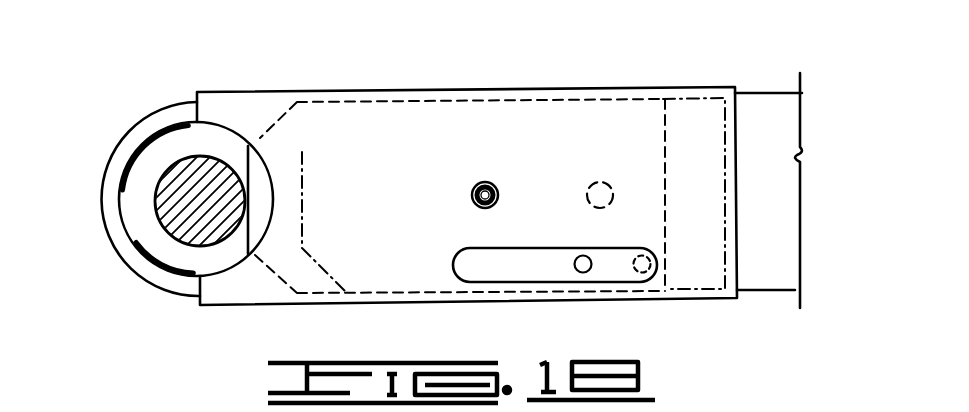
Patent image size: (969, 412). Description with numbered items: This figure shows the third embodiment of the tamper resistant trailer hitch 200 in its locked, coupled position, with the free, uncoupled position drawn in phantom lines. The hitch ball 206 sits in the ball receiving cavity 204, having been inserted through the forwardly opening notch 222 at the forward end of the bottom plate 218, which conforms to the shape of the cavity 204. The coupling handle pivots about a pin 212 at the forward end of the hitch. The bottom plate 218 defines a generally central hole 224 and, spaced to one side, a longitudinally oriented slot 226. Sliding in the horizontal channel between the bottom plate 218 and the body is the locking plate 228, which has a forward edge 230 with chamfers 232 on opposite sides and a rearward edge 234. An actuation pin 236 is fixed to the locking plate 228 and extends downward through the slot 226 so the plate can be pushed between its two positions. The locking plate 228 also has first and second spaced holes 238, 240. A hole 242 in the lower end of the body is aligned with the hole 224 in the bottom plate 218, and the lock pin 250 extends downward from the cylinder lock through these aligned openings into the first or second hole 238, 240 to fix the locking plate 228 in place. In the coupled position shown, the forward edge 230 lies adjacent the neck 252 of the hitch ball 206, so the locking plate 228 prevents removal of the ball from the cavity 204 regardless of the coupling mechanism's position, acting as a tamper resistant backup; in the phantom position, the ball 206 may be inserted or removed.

The tamper resistant trailer hitch 200 is at (653, 55).
The ball receiving cavity 204 is at (148, 258).
The hitch ball 206 is at (187, 200).
The pin 212 is at (137, 133).
The bottom plate 218 is at (397, 138).
The forwardly opening notch 222 is at (248, 245).
The hole 224 is at (543, 114).
The slot 226 is at (518, 281).
The locking plate 228 is at (262, 188).
The forward edge 230 is at (211, 158).
The chamfers 232 is at (260, 138).
The rearward edge 234 is at (665, 177).
The actuation pin 236 is at (590, 272).
The first hole 238 is at (485, 195).
The second hole 240 is at (607, 189).
The hole 242 is at (487, 183).
The lock pin 250 is at (497, 187).
The neck 252 is at (198, 243).